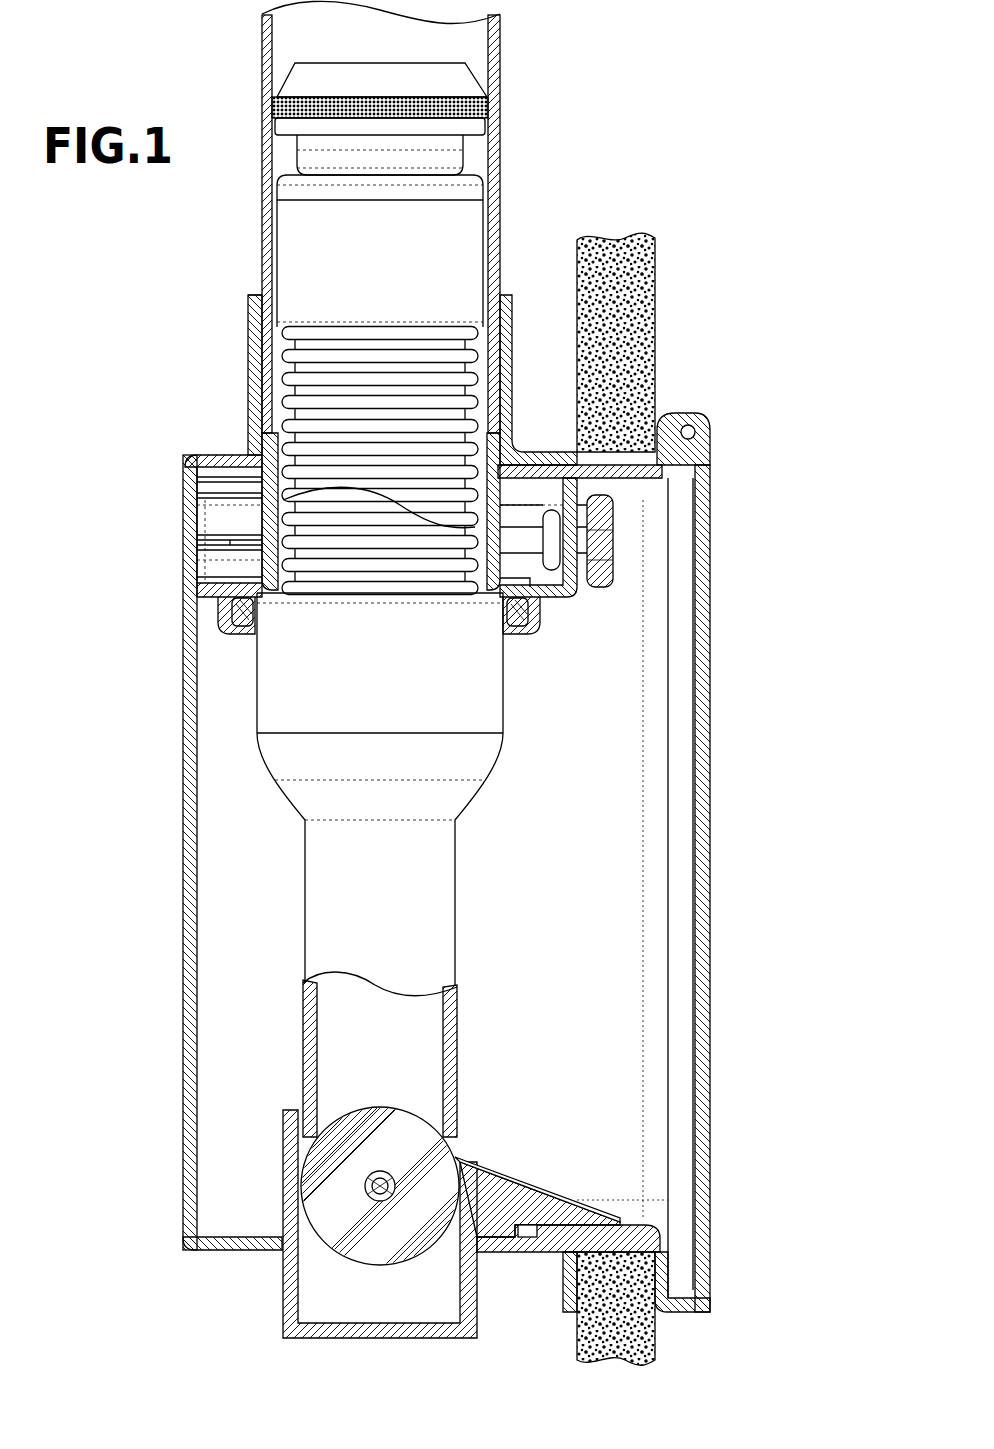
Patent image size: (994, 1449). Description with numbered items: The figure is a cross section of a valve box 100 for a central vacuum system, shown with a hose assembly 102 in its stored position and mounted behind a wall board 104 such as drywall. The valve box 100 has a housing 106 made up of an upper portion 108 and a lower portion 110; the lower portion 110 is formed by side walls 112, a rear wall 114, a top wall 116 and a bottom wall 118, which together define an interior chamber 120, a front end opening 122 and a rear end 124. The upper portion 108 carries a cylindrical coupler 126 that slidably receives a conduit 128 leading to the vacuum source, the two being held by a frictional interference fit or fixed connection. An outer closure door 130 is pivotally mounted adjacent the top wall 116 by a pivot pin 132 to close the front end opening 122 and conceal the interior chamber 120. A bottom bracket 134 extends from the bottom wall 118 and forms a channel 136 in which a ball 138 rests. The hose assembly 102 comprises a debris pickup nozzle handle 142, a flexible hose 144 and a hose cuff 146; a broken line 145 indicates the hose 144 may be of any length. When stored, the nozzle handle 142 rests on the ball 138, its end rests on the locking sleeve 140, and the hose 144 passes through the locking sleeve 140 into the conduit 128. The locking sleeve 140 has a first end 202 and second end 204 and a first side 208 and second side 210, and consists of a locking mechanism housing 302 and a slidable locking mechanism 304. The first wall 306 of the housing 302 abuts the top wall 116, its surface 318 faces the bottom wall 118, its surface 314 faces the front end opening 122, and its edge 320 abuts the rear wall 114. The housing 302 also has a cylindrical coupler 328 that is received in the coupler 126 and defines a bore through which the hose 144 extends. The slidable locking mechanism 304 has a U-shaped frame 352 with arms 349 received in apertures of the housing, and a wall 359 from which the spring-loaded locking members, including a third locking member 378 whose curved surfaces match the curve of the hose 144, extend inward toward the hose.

The valve box 100 is at (222, 415).
The hose assembly 102 is at (305, 55).
The wall board 104 is at (648, 330).
The housing 106 is at (183, 712).
The upper portion 108 is at (247, 357).
The lower portion 110 is at (185, 1040).
The side walls 112 is at (268, 1013).
The rear wall 114 is at (188, 997).
The top wall 116 is at (222, 457).
The bottom wall 118 is at (235, 1250).
The interior chamber 120 is at (228, 1140).
The front end opening 122 is at (745, 475).
The rear end 124 is at (160, 538).
The cylindrical coupler 126 is at (250, 325).
The conduit 128 is at (500, 92).
The outer closure door 130 is at (712, 938).
The pivot pin 132 is at (690, 432).
The bottom bracket 134 is at (283, 1312).
The channel 136 is at (323, 1268).
The ball 138 is at (400, 1258).
The locking sleeve 140 is at (672, 619).
The debris pickup nozzle handle 142 is at (462, 910).
The flexible hose 144 is at (400, 390).
The broken line 145 is at (392, 515).
The hose cuff 146 is at (318, 255).
The first end 202 is at (492, 430).
The second end 204 is at (673, 599).
The first side 208 is at (584, 567).
The second side 210 is at (271, 611).
The locking mechanism housing 302 is at (578, 596).
The slidable locking mechanism 304 is at (720, 545).
The first wall 306 is at (673, 599).
The surface 314 is at (615, 500).
The surface 318 is at (560, 604).
The edge 320 is at (195, 600).
The cylindrical coupler 328 is at (258, 520).
The arms 349 is at (570, 478).
The U-shaped frame 352 is at (618, 535).
The wall 359 is at (228, 508).
The third locking member 378 is at (222, 548).